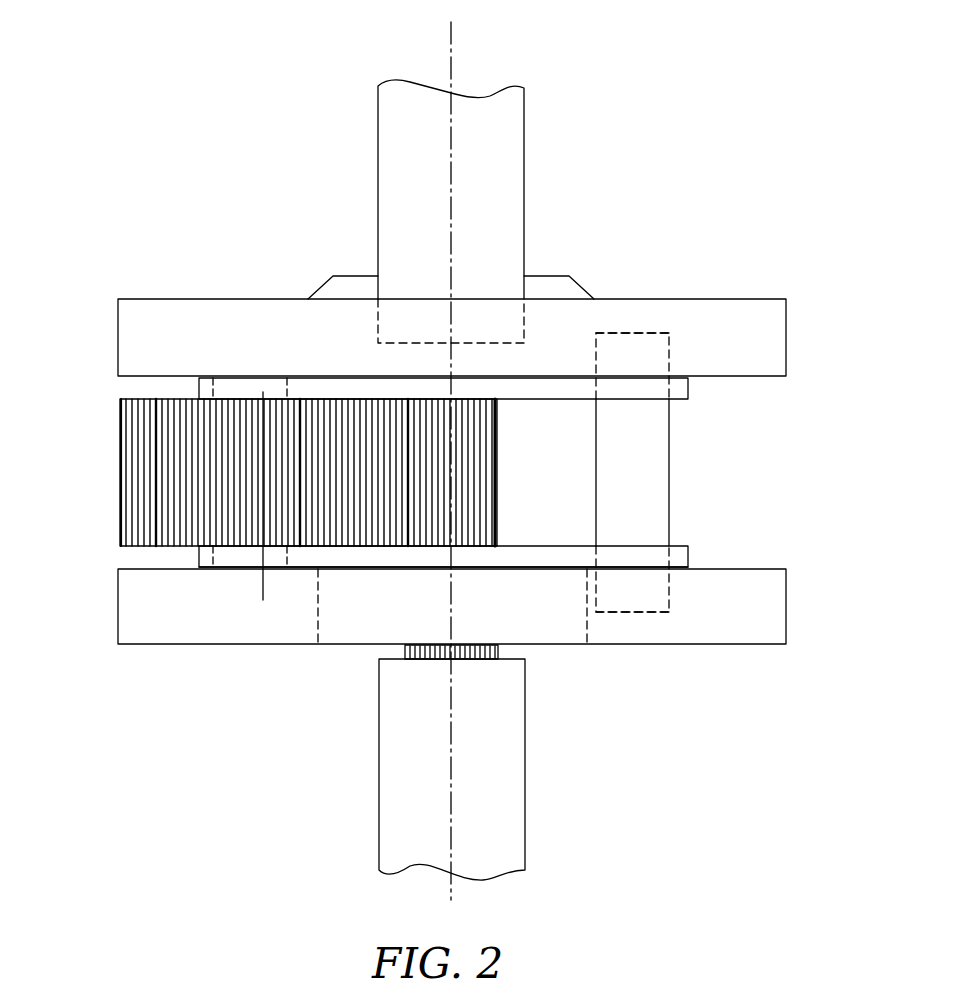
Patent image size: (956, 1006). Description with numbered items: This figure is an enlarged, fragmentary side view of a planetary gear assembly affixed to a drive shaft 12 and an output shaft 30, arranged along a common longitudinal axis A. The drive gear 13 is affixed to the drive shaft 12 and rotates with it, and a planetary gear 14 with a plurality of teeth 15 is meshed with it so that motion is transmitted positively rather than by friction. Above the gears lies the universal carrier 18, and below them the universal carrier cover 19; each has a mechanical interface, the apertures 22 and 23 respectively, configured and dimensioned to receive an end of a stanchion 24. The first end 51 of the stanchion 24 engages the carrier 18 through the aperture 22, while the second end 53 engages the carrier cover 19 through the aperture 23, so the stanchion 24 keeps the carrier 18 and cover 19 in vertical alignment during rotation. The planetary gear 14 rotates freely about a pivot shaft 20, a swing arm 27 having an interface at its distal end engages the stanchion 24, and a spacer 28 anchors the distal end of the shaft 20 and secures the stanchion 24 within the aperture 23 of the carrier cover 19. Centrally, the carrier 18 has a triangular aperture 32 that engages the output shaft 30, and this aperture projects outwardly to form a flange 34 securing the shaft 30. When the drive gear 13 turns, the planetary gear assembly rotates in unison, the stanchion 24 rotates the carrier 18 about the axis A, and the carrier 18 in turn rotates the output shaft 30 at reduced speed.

The longitudinal axis A is at (452, 51).
The drive shaft 12 is at (498, 505).
The drive gear 13 is at (482, 440).
The planetary gear 14 is at (135, 399).
The teeth 15 is at (148, 502).
The universal carrier 18 is at (773, 352).
The universal carrier cover 19 is at (775, 600).
The shaft 20 is at (250, 386).
The aperture 22 is at (670, 352).
The aperture 23 is at (638, 613).
The stanchion 24 is at (655, 490).
The swing arm 27 is at (680, 388).
The spacer 28 is at (383, 563).
The output shaft 30 is at (511, 162).
The triangular aperture 32 is at (527, 318).
The flange 34 is at (340, 285).
The first end 51 is at (627, 343).
The second end 53 is at (617, 593).